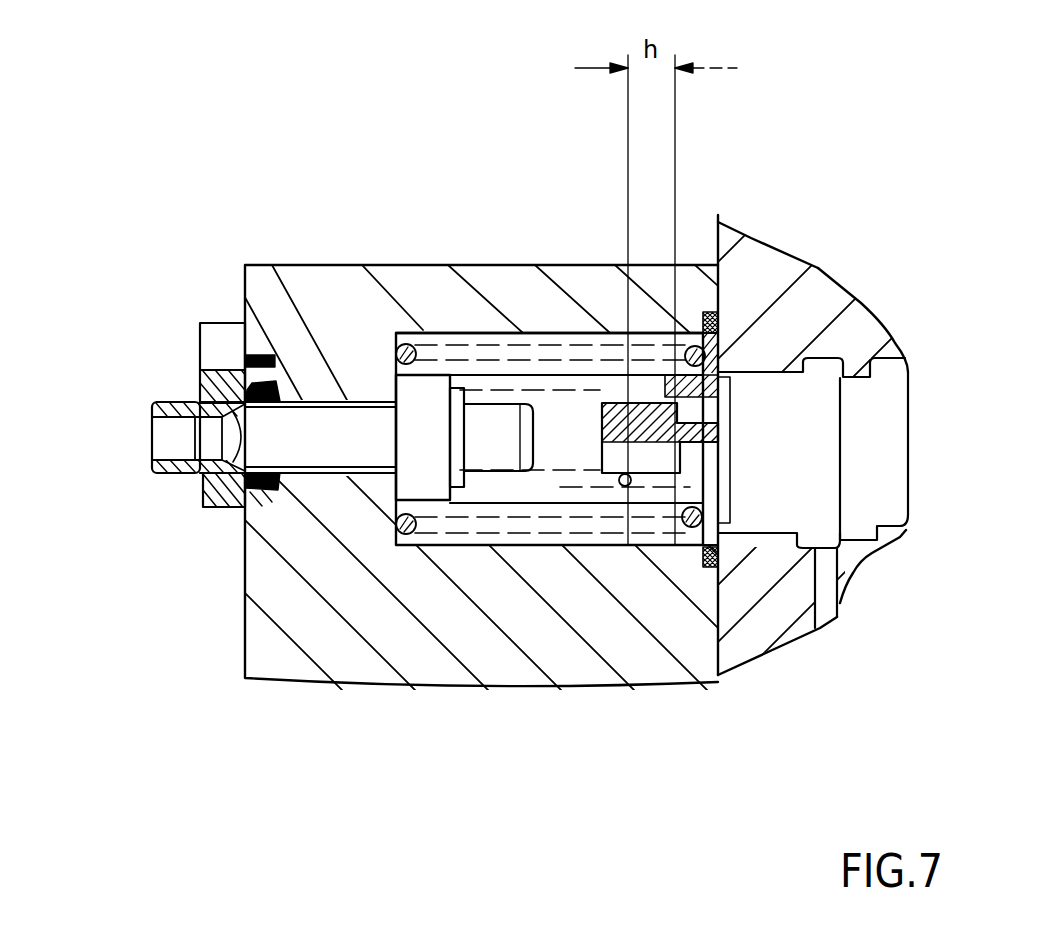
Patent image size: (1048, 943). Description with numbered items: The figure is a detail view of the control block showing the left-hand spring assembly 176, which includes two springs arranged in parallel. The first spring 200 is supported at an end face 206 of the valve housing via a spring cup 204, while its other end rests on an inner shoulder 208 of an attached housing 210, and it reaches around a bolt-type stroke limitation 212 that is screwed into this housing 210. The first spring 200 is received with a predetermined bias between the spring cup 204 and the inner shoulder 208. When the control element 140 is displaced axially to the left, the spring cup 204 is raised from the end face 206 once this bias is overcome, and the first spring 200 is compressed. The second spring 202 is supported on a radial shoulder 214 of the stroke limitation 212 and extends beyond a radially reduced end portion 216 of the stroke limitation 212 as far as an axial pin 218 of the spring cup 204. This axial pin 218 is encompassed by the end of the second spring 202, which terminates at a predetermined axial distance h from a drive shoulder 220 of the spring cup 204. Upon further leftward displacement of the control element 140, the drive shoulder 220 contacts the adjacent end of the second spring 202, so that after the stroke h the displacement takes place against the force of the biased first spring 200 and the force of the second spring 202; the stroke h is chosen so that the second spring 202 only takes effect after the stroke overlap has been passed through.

The control element 140 is at (821, 268).
The spring assembly 176 is at (440, 303).
The first spring 200 is at (470, 355).
The second spring 202 is at (543, 395).
The spring cup 204 is at (690, 472).
The end face 206 is at (718, 222).
The inner shoulder 208 is at (412, 542).
The attached housing 210 is at (278, 292).
The stroke limitation 212 is at (295, 440).
The radial shoulder 214 is at (467, 455).
The end portion 216 is at (512, 455).
The axial pin 218 is at (647, 458).
The drive shoulder 220 is at (730, 404).